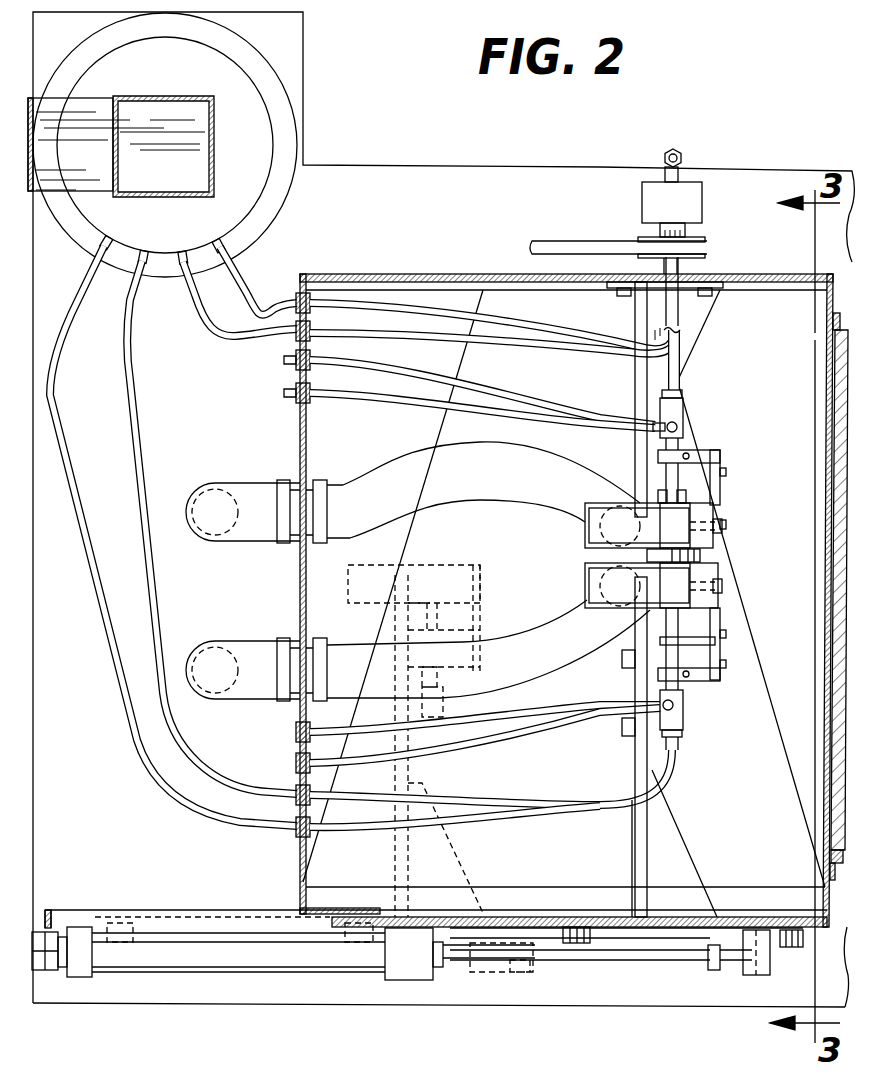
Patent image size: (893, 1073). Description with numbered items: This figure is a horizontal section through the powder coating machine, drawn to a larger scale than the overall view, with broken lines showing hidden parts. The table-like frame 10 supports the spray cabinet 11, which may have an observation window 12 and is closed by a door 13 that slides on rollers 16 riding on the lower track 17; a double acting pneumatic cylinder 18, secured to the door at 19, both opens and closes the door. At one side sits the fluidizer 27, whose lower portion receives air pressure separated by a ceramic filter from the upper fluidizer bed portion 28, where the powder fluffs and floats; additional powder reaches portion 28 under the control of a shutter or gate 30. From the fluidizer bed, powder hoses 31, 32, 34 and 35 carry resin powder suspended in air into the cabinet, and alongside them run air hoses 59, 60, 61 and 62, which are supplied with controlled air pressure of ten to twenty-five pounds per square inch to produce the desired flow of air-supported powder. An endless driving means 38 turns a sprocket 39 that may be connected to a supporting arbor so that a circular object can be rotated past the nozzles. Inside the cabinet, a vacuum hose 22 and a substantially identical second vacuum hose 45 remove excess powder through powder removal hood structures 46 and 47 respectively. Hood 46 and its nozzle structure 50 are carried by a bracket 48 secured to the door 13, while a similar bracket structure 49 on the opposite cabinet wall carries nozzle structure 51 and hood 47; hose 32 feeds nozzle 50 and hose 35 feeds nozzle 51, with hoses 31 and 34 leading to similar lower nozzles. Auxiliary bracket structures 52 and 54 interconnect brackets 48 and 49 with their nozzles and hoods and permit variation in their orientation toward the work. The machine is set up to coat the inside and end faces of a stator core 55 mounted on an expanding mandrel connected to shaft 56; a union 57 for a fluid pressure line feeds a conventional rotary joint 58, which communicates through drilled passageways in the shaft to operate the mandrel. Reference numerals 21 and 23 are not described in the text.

The table-like frame 10 is at (357, 167).
The spray cabinet 11 is at (395, 273).
The observation window 12 is at (835, 582).
The door 13 is at (191, 912).
The rollers 16 is at (120, 937).
The lower track 17 is at (630, 937).
The pneumatic cylinder 18 is at (355, 972).
The securing point of cylinder to door 19 is at (548, 945).
The diagonal brace 21 is at (784, 742).
The vacuum hose 22 is at (248, 690).
The adjusting nut 23 is at (36, 972).
The fluidizer 27 is at (82, 247).
The upper portion of fluidizer 28 is at (88, 205).
The shutter or gate 30 is at (57, 106).
The hose 31 is at (73, 307).
The hose or conduit 32 is at (135, 330).
The hose 34 is at (213, 340).
The hose or conduit 35 is at (238, 278).
The endless driving means 38 is at (582, 241).
The sprocket 39 is at (700, 243).
The second vacuum hose 45 is at (248, 530).
The powder removal hood structure 46 is at (585, 582).
The powder removal hood structure 47 is at (585, 529).
The bracket 48 is at (634, 832).
The bracket structure 49 is at (634, 373).
The nozzle structure 50 is at (683, 707).
The nozzle structure 51 is at (683, 400).
The auxiliary bracket structure 52 is at (724, 660).
The auxiliary bracket structure 54 is at (724, 479).
The stator core 55 is at (700, 555).
The shaft 56 is at (682, 342).
The union 57 is at (681, 155).
The rotary joint 58 is at (697, 205).
The air hose 59 is at (357, 767).
The air hose 60 is at (388, 712).
The air hose 61 is at (375, 393).
The air hose 62 is at (413, 368).